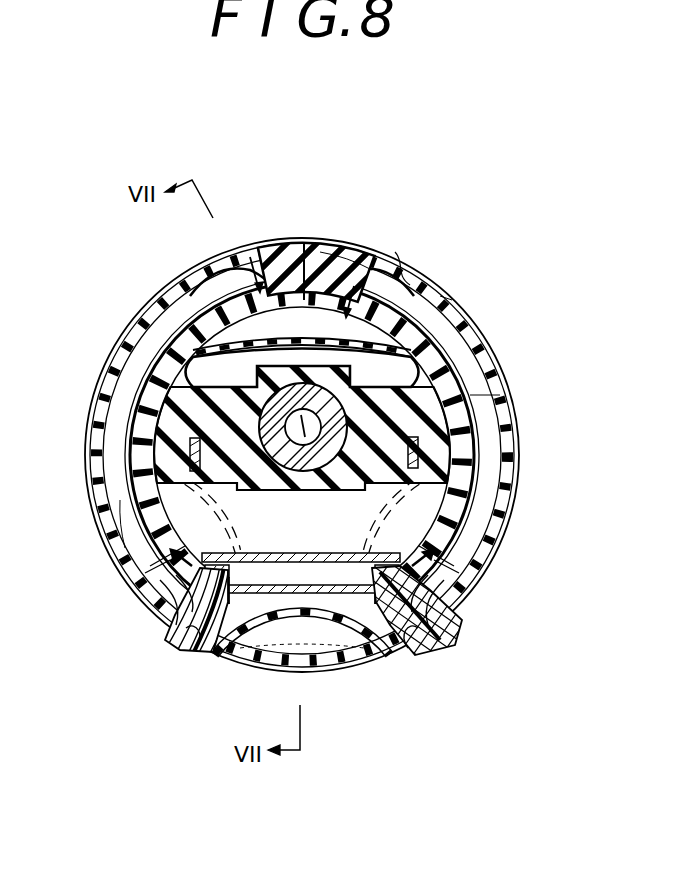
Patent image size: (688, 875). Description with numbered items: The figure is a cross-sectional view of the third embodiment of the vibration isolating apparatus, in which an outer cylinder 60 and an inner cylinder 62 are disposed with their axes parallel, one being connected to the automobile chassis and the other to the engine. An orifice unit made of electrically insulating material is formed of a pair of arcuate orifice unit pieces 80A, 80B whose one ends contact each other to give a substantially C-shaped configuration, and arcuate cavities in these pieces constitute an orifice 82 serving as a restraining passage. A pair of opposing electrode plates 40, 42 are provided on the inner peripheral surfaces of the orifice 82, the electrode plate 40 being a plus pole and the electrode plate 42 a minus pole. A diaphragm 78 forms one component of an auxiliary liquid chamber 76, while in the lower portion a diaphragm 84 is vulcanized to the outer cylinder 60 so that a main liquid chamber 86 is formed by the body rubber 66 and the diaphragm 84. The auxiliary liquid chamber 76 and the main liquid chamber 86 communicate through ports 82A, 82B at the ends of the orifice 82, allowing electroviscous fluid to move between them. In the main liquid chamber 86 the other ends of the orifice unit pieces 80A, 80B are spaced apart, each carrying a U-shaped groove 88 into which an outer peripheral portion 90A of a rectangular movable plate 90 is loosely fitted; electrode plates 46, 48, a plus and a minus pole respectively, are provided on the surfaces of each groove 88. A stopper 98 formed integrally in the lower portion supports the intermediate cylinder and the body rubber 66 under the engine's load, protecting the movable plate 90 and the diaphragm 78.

The electrode plate 40 is at (102, 505).
The electrode plate 42 is at (135, 542).
The electrode plate 46 is at (168, 612).
The electrode plate 48 is at (190, 623).
The outer cylinder 60 is at (455, 585).
The inner cylinder 62 is at (285, 400).
The body rubber 66 is at (432, 403).
The auxiliary liquid chamber 76 is at (323, 327).
The diaphragm 78 is at (440, 298).
The orifice unit piece 80A is at (268, 248).
The orifice unit piece 80B is at (350, 240).
The orifice 82 is at (112, 428).
The port 82A is at (298, 240).
The port 82B is at (140, 556).
The diaphragm 84 is at (330, 610).
The main liquid chamber 86 is at (284, 527).
The groove for loosely fitting with a movable plate 88 is at (172, 635).
The movable plate 90 is at (283, 610).
The outer peripheral portion 90A is at (194, 655).
The stopper 98 is at (313, 553).